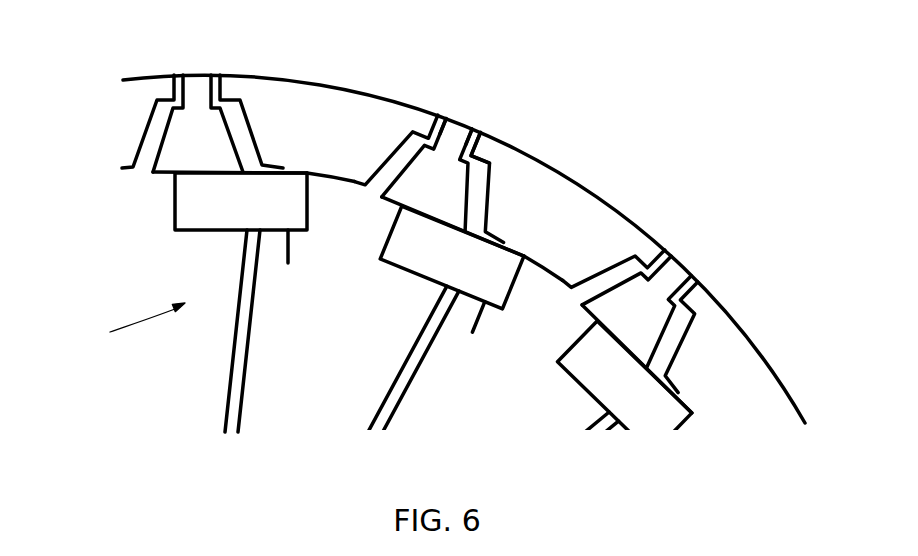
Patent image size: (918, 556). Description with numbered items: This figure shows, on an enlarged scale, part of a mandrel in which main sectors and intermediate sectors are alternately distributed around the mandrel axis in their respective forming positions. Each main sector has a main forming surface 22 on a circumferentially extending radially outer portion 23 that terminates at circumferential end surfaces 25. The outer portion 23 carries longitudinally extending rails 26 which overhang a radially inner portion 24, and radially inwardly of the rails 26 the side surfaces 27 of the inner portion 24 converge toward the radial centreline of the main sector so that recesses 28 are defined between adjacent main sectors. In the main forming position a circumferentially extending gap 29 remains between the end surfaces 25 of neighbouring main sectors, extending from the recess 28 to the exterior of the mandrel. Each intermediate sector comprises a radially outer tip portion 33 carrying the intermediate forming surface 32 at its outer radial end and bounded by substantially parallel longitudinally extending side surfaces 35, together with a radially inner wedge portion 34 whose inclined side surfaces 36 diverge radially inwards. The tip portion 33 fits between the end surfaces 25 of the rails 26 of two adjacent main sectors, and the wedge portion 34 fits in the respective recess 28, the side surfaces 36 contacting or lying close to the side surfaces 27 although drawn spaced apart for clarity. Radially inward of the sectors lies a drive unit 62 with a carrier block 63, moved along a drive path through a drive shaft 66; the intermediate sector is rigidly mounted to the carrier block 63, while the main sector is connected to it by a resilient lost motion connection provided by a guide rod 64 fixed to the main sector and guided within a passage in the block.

The main forming surface 22 is at (573, 185).
The radially outer portion 23 is at (608, 218).
The radially inner portion 24 is at (592, 258).
The circumferential end surface 25 is at (668, 273).
The rail 26 is at (488, 150).
The side surface 27 is at (617, 277).
The recess 28 is at (398, 168).
The gap 29 is at (420, 135).
The intermediate forming surface 32 is at (470, 120).
The radially outer tip portion 33 is at (453, 140).
The radially inner wedge portion 34 is at (423, 178).
The side surface 35 is at (168, 80).
The inclined side surface 36 is at (157, 138).
The drive unit 62 is at (128, 324).
The carrier block 63 is at (197, 208).
The guide rod 64 is at (288, 264).
The drive shaft 66 is at (235, 345).